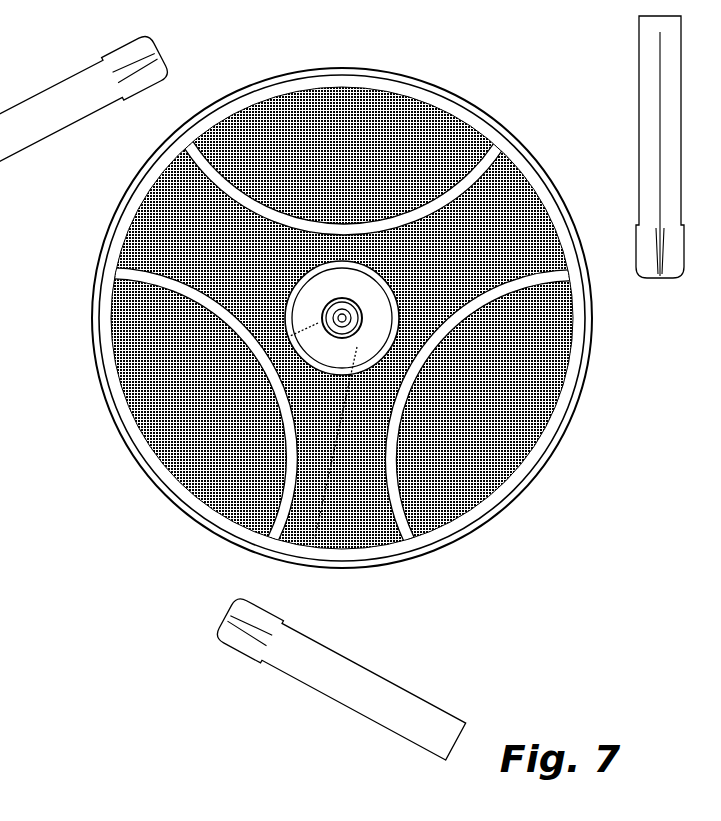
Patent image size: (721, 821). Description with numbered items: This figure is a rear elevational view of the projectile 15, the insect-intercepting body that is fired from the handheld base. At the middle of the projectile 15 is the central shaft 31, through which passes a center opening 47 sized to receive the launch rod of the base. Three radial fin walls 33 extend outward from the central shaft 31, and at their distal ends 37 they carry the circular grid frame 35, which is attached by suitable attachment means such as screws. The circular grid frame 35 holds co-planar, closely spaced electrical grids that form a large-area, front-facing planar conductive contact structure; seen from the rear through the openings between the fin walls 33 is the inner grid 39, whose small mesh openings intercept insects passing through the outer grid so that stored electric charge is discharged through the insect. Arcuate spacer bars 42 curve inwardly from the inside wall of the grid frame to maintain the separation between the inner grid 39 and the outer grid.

The projectile 15 is at (360, 381).
The central shaft 31 is at (385, 548).
The radial fin walls 33 is at (568, 250).
The circular grid frame 35 is at (274, 78).
The distal ends 37 is at (92, 150).
The inner grid 39 is at (574, 382).
The arcuate spacer bars 42 is at (467, 535).
The center opening 47 is at (188, 492).